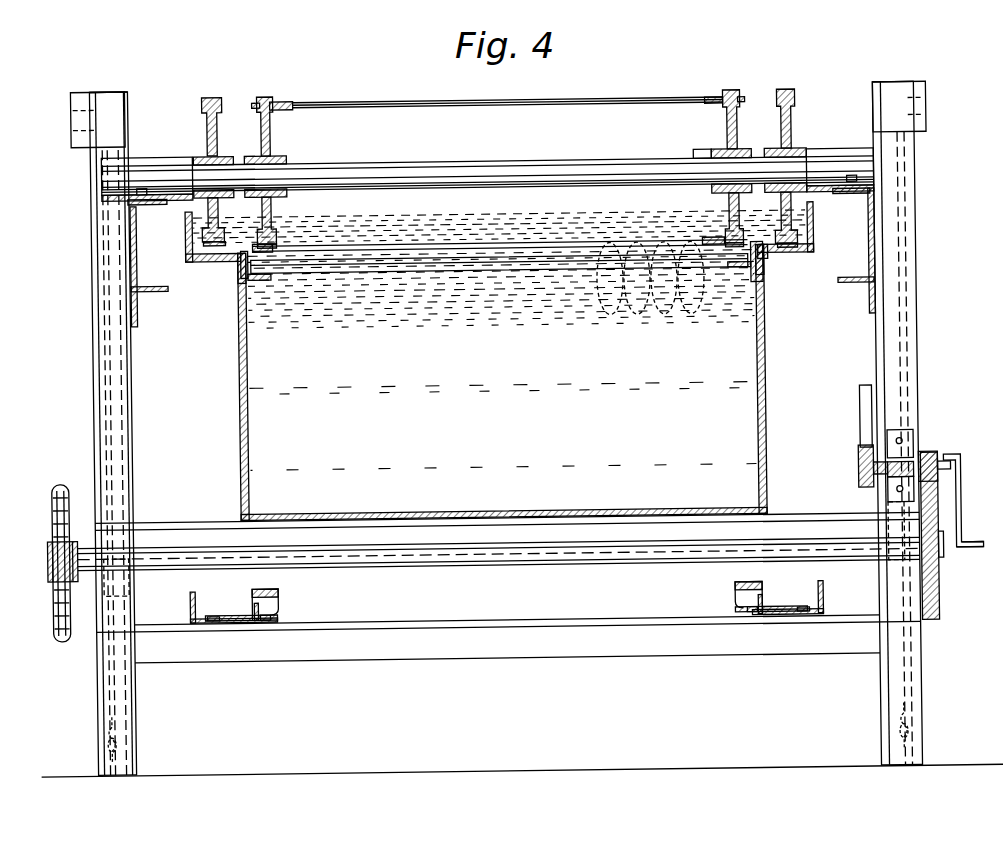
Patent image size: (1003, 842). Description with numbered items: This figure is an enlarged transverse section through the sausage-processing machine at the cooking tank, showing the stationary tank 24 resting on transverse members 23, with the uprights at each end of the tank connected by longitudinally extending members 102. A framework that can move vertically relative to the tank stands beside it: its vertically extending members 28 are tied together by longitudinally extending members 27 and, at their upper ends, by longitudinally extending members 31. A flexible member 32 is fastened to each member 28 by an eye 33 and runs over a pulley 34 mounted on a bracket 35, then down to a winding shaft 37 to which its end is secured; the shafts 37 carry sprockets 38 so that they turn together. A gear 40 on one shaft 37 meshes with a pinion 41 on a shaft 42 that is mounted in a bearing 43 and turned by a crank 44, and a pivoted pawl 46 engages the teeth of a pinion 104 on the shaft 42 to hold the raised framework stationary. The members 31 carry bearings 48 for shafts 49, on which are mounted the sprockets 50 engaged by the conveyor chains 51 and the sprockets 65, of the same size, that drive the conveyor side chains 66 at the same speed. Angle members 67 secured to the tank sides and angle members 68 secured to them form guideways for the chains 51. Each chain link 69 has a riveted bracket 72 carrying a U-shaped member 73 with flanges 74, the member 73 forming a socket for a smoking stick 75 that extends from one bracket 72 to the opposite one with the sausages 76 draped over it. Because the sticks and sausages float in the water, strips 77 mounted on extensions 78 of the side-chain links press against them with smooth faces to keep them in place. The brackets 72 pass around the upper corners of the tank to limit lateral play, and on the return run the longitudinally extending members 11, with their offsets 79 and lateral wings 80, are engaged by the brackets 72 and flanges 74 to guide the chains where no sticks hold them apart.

The longitudinally extending member 11 is at (190, 605).
The transverse member 23 is at (777, 528).
The tank 24 is at (767, 397).
The longitudinally extending member 27 is at (888, 598).
The vertically extending member 28 is at (138, 702).
The longitudinally extending member 31 is at (139, 225).
The flexible member 32 is at (117, 463).
The eye 33 is at (104, 745).
The pulley 34 is at (101, 87).
The bracket 35 is at (75, 136).
The winding shaft 37 is at (890, 527).
The sprocket 38 is at (52, 600).
The gear 40 is at (938, 568).
The pinion 41 is at (938, 462).
The shaft 42 is at (921, 453).
The bearing 43 is at (898, 444).
The crank 44 is at (960, 527).
The pawl 46 is at (861, 430).
The bearing 48 is at (137, 158).
The shaft 49 is at (752, 168).
The sprocket 50 is at (222, 122).
The conveyor chain 51 is at (230, 618).
The sprocket 65 is at (275, 126).
The conveyor side chain 66 is at (272, 98).
The angle member 67 is at (243, 260).
The angle member 68 is at (189, 222).
The link 69 is at (225, 246).
The bracket 72 is at (251, 282).
The U-shaped member 73 is at (282, 276).
The flange 74 is at (280, 594).
The smoking stick 75 is at (483, 262).
The sausage 76 is at (632, 303).
The strip 77 is at (532, 100).
The extension 78 is at (294, 104).
The offset 79 is at (264, 620).
The lateral wing 80 is at (277, 614).
The longitudinally extending member 102 is at (144, 292).
The pinion 104 is at (858, 475).